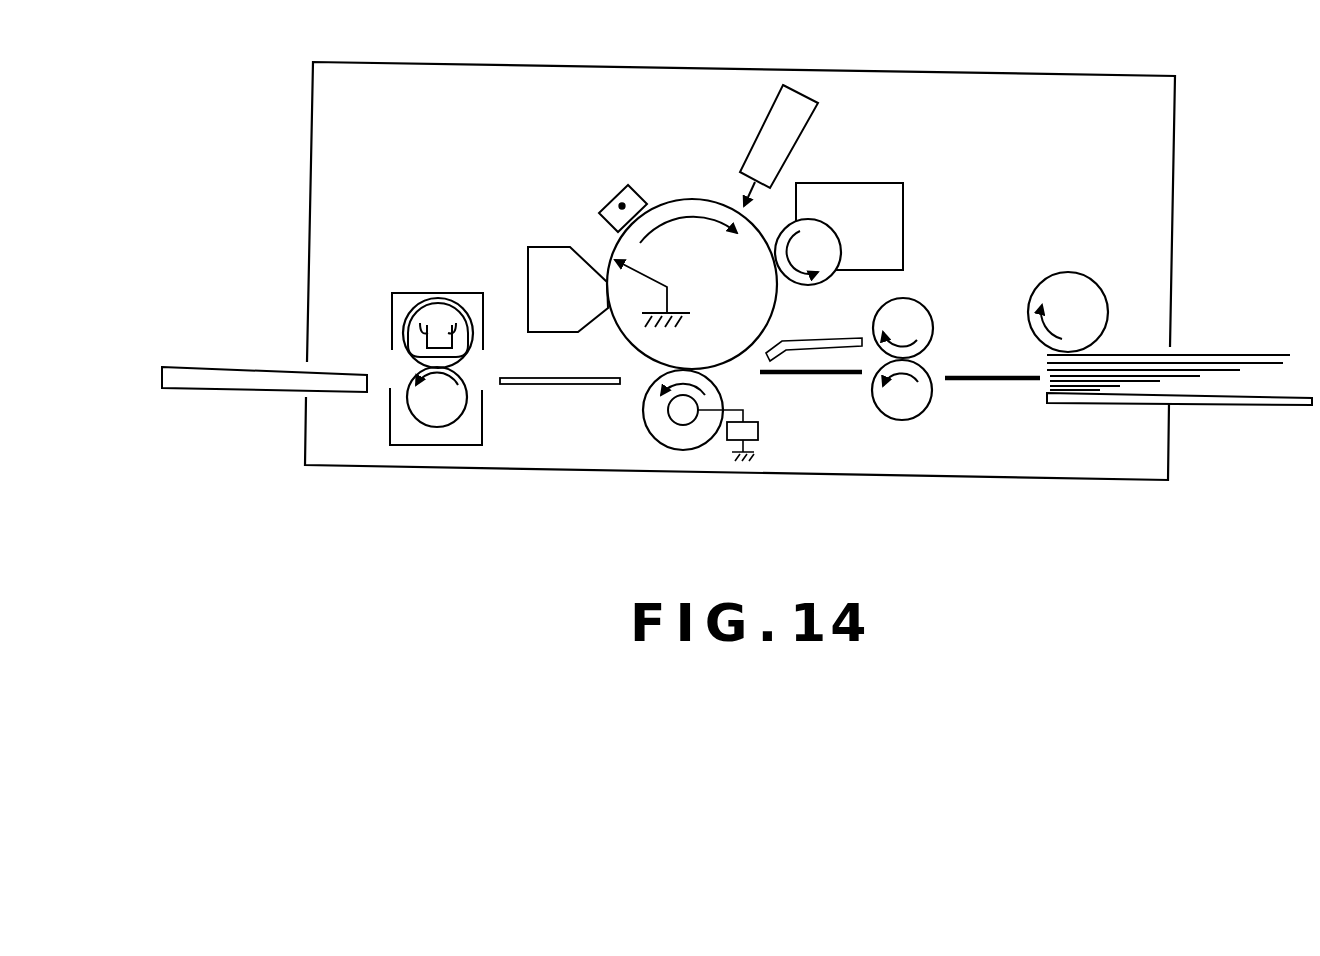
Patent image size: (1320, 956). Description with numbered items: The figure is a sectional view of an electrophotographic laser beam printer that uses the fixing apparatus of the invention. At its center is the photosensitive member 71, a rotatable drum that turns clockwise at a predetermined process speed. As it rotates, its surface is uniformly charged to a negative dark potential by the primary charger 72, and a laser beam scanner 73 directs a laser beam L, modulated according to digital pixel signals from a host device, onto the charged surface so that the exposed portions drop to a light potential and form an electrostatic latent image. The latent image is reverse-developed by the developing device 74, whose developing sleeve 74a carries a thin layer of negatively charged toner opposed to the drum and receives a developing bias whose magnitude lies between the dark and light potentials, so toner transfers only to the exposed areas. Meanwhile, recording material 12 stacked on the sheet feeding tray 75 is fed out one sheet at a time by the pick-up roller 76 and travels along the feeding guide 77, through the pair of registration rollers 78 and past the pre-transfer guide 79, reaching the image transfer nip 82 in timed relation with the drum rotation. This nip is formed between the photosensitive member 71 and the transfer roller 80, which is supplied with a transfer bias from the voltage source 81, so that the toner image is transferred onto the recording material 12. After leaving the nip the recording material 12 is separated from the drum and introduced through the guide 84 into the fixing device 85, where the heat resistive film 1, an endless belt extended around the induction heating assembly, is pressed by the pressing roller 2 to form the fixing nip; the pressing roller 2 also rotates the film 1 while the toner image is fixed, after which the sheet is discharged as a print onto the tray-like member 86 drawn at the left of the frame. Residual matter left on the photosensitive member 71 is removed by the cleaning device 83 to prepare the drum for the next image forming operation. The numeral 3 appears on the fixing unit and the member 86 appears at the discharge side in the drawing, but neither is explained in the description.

The heat resistive film 1 is at (440, 300).
The pressing roller 2 is at (437, 427).
The developer container 3 is at (468, 323).
The recording material 12 is at (1213, 355).
The photosensitive member 71 is at (680, 197).
The primary charger 72 is at (610, 195).
The laser beam scanner 73 is at (798, 113).
The developing device 74 is at (878, 183).
The developing sleeve 74a is at (843, 248).
The sheet feeding tray 75 is at (1222, 405).
The pick-up roller 76 is at (1083, 285).
The feeding guide 77 is at (1003, 380).
The registration rollers 78 is at (910, 403).
The pre-transfer guide 79 is at (847, 378).
The transfer roller 80 is at (655, 413).
The voltage source 81 is at (758, 423).
The image transfer nip 82 is at (690, 368).
The cleaning device 83 is at (557, 257).
The guide 84 is at (530, 388).
The fixing device 85 is at (407, 297).
The feed tray 86 is at (238, 380).
The laser beam L is at (740, 190).